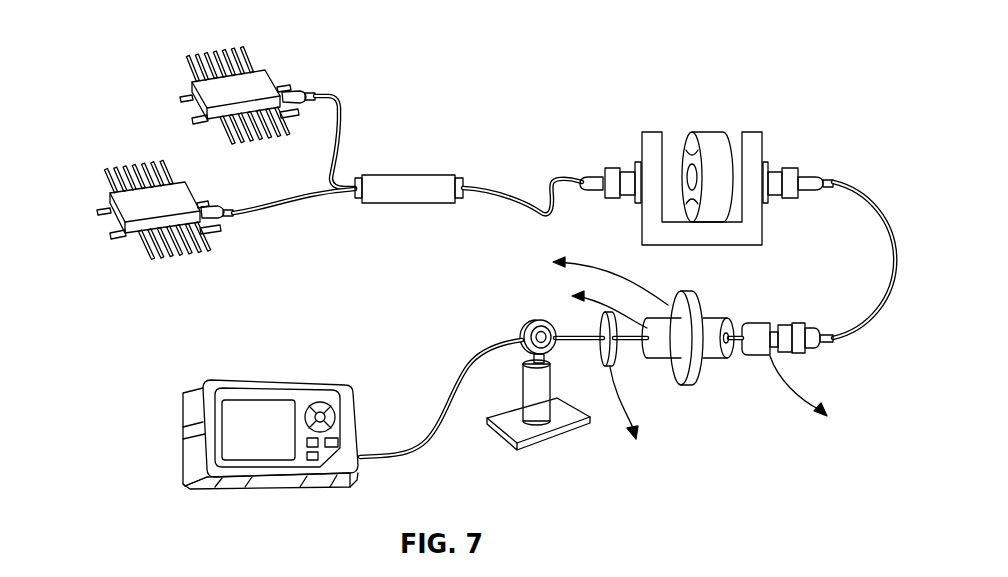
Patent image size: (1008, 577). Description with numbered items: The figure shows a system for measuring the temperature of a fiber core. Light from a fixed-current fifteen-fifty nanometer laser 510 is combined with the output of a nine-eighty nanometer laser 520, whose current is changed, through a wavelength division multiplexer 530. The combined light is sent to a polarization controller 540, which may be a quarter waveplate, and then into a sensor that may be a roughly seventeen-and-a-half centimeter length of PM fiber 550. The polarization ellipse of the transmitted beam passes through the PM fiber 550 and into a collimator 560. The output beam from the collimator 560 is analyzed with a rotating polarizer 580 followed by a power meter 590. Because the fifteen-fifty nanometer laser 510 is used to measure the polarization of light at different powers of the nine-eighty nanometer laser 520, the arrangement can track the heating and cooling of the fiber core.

The 1550 nm laser 510 is at (265, 90).
The 980 nm laser 520 is at (170, 202).
The wavelength division multiplexer 530 is at (448, 180).
The polarization controller 540 is at (762, 147).
The PM fiber 550 is at (882, 202).
The collimator 560 is at (757, 347).
The rotating polarizer 580 is at (712, 363).
The power meter 590 is at (197, 458).